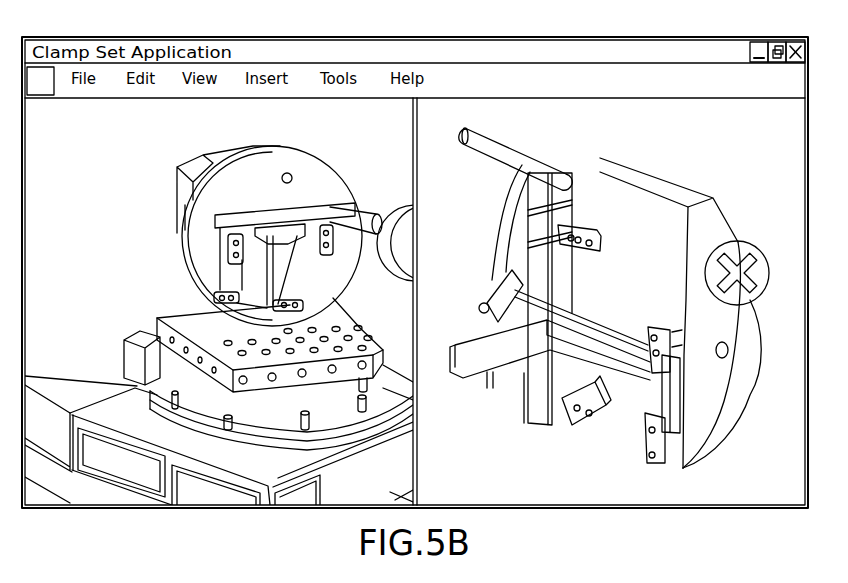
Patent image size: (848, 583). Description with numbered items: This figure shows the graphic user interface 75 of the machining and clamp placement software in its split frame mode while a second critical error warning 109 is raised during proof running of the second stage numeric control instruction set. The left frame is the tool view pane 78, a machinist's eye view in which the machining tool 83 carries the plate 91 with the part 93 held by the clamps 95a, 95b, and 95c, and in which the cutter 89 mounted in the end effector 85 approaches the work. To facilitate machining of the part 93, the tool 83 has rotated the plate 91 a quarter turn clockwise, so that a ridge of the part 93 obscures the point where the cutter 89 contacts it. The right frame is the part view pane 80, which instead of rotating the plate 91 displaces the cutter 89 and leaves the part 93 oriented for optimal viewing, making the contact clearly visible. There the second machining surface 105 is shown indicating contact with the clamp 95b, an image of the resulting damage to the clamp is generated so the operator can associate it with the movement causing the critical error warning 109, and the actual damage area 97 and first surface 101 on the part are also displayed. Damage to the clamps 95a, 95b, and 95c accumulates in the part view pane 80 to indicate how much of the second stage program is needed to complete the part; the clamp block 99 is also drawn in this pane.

The graphic user interface 75 is at (135, 40).
The tool view pane 78 is at (112, 152).
The part view pane 80 is at (727, 143).
The machining tool 83 is at (200, 163).
The end effector 85 is at (398, 272).
The cutter 89 is at (363, 208).
The plate 91 is at (226, 248).
The part 93 is at (283, 224).
The clamp 95a is at (278, 308).
The clamp 95b is at (327, 225).
The clamp 95c is at (222, 293).
The actual damage area 97 is at (680, 388).
The clamp block 99 is at (650, 433).
The first surface 101 is at (672, 398).
The second machining surface 105 is at (570, 197).
The critical error warning 109 is at (752, 243).